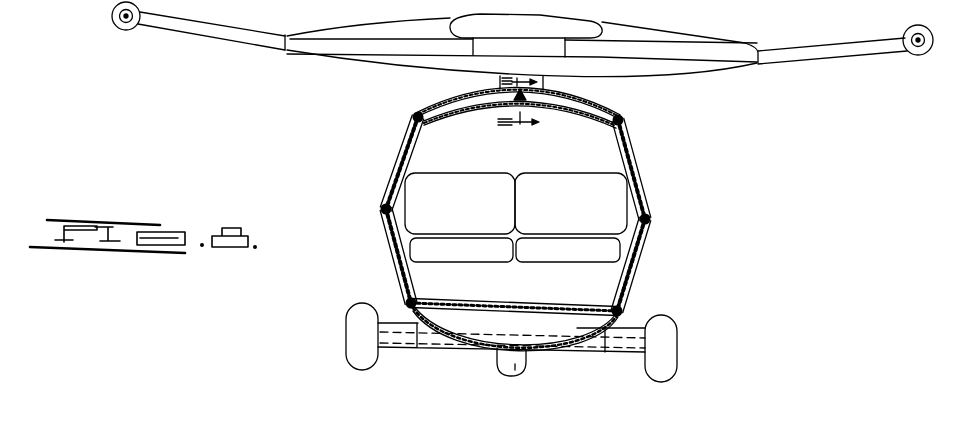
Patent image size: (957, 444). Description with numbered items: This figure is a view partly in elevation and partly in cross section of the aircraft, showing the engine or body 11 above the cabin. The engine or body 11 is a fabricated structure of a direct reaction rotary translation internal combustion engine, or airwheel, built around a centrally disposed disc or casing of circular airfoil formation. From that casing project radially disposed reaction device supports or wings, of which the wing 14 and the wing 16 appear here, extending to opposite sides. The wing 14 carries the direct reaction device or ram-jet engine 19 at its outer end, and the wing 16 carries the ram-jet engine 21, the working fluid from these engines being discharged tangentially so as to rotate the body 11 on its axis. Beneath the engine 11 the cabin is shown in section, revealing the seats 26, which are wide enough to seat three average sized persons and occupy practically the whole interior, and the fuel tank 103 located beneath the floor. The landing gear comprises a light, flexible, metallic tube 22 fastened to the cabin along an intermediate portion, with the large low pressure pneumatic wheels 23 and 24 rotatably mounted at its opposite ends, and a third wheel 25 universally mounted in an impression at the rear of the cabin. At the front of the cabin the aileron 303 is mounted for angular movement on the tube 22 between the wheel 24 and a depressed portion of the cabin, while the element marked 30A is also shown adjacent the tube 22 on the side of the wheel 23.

The engine or body 11 is at (653, 26).
The reaction device support or wing 14 is at (215, 32).
The reaction device support or wing 16 is at (813, 53).
The direct reaction device or ram-jet engine 19 is at (125, 30).
The direct reaction device or ram-jet engine 21 is at (918, 55).
The flexible metallic tube 22 is at (660, 306).
The pneumatic wheel 23 is at (357, 330).
The pneumatic wheel 24 is at (663, 331).
The third wheel 25 is at (525, 366).
The seats 26 is at (602, 198).
The left axle housing 30A is at (390, 323).
The aileron 303 is at (627, 326).
The fuel tank 103 is at (482, 326).